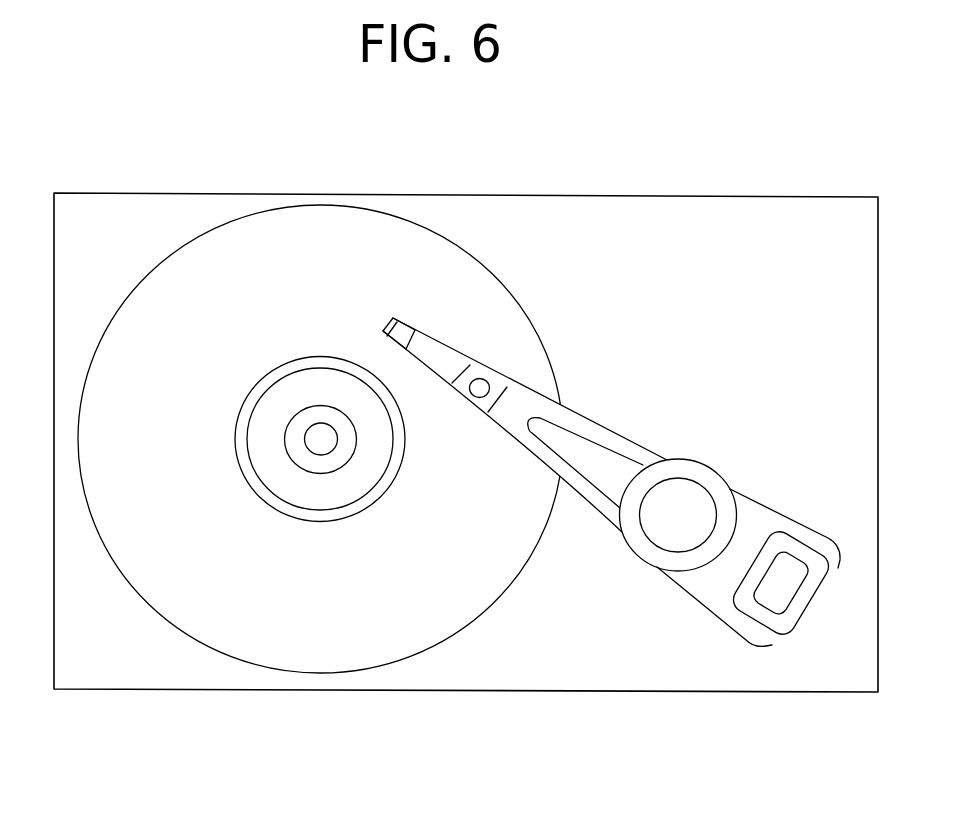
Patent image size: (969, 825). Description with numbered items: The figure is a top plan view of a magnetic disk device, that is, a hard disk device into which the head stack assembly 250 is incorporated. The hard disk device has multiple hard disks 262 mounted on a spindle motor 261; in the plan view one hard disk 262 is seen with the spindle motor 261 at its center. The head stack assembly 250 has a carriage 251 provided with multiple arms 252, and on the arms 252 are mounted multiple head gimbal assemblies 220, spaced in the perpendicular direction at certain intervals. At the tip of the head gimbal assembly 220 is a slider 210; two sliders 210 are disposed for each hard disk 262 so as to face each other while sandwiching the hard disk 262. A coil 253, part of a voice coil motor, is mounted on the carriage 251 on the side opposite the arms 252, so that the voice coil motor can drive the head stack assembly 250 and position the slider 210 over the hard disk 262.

The slider 210 is at (404, 320).
The head gimbal assembly 220 is at (450, 383).
The head stack assembly 250 is at (687, 594).
The carriage 251 is at (692, 460).
The arm 252 is at (596, 508).
The coil 253 is at (815, 605).
The spindle motor 261 is at (318, 455).
The hard disk 262 is at (233, 658).